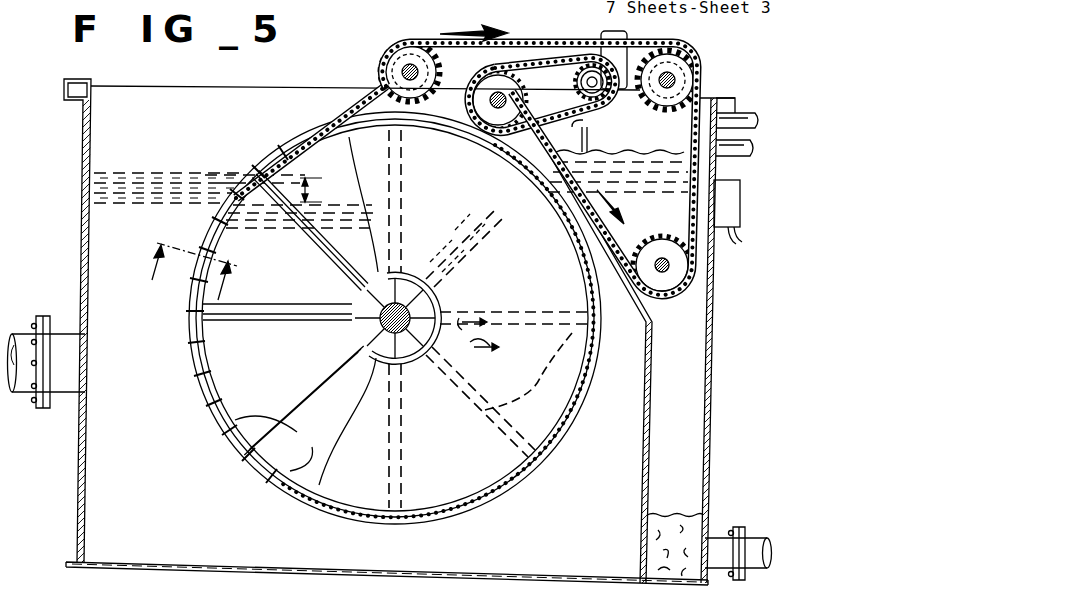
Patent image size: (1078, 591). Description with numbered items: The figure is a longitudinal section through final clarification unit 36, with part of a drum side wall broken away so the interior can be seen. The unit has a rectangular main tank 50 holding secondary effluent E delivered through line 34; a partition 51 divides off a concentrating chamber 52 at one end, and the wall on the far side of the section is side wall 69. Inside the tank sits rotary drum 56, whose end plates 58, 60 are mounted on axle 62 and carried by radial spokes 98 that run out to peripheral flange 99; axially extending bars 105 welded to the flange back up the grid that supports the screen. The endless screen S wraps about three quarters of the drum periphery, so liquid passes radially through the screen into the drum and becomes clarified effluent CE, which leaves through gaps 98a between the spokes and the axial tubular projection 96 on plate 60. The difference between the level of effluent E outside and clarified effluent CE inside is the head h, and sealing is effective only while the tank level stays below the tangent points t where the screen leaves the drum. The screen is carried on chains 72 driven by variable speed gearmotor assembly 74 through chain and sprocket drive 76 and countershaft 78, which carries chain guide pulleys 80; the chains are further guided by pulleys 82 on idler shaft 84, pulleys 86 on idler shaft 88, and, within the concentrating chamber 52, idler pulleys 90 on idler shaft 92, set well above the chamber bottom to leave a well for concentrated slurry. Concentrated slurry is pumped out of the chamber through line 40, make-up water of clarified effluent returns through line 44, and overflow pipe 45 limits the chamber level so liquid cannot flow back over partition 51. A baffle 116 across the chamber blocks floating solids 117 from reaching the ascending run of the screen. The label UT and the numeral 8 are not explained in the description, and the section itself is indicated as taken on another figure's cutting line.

The final clarification unit 36 is at (118, 73).
The chains 72 is at (356, 84).
The guide pulleys 82 is at (398, 48).
The idler shaft 84 is at (404, 69).
The variable speed gearmotor assembly 74 is at (627, 37).
The idler shaft 88 is at (697, 77).
The guide pulleys 86 is at (678, 89).
The line 44 is at (758, 118).
The overflow pipe 45 is at (752, 148).
The upper trough UT is at (740, 212).
The chain and sprocket drive 76 is at (580, 113).
The baffle 116 is at (589, 140).
The floating solids 117 is at (636, 150).
The countershaft 78 is at (486, 118).
The chain guide pulleys 80 is at (494, 107).
The gaps 98a is at (418, 268).
The axial tubular projection 96 is at (438, 287).
The axle 62 is at (374, 310).
The peripheral flange 99 is at (210, 334).
The radial spokes 98 is at (325, 378).
The end plate 58 is at (250, 391).
The end plate 60 is at (419, 447).
The bars 105 is at (282, 443).
The rotary drum 56 is at (203, 398).
The main tank 50 is at (81, 437).
The line 34 is at (68, 340).
The idler shaft 92 is at (670, 265).
The idler pulleys 90 is at (688, 283).
The concentrating chamber 52 is at (686, 358).
The partition 51 is at (642, 462).
The side wall 69 is at (708, 450).
The line 40 is at (758, 538).
The section line 8 is at (191, 273).
The endless screen S is at (293, 129).
The tangent points t is at (250, 178).
The head h is at (310, 190).
The secondary effluent E is at (99, 229).
The clarified effluent CE is at (266, 254).